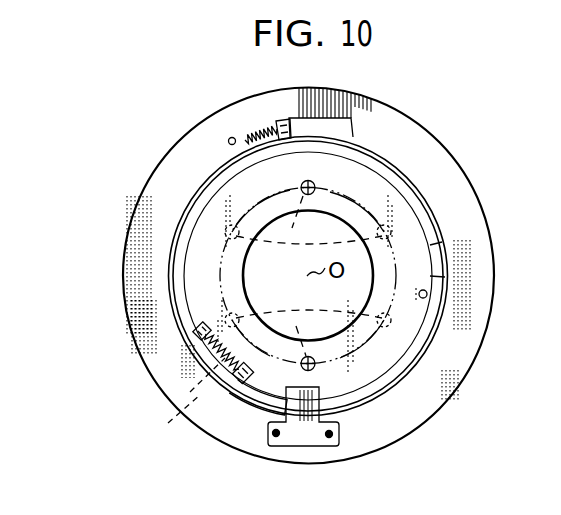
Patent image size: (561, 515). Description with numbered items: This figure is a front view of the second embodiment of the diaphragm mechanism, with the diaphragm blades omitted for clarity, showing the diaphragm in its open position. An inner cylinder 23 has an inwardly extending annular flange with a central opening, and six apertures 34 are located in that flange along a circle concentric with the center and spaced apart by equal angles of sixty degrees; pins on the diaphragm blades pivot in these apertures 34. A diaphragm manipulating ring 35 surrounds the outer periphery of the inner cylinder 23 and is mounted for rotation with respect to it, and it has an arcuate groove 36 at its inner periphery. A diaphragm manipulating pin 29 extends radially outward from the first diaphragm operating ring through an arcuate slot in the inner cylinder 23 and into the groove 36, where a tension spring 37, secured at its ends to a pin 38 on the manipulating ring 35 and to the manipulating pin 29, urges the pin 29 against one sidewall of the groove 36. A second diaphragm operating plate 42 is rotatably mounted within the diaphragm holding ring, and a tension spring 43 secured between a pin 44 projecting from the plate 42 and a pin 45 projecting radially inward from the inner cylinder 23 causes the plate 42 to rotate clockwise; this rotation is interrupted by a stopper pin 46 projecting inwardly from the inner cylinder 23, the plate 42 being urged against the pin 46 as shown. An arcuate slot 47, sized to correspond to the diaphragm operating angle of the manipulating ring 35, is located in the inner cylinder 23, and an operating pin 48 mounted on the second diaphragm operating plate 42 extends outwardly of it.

The diaphragm manipulating ring 35 is at (437, 160).
The inner cylinder 23 is at (430, 218).
The second diaphragm operating plate 42 is at (425, 270).
The operating pin 48 is at (427, 295).
The apertures 34 is at (309, 276).
The arcuate groove 36 is at (326, 116).
The diaphragm manipulating pin 29 is at (284, 118).
The tension spring 37 is at (248, 124).
The pin 38 is at (231, 137).
The arcuate slot 47 is at (389, 382).
The pin 45 is at (198, 326).
The stopper pin 46 is at (232, 370).
The pin 44 is at (243, 382).
The tension spring 43 is at (213, 405).